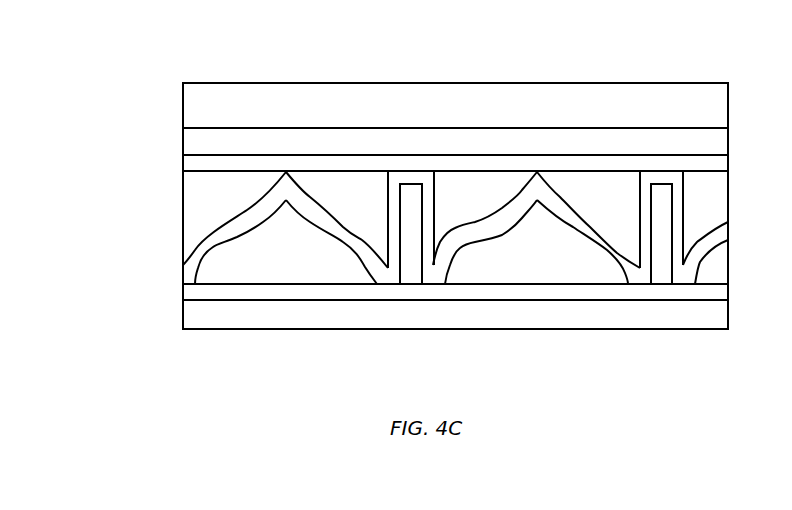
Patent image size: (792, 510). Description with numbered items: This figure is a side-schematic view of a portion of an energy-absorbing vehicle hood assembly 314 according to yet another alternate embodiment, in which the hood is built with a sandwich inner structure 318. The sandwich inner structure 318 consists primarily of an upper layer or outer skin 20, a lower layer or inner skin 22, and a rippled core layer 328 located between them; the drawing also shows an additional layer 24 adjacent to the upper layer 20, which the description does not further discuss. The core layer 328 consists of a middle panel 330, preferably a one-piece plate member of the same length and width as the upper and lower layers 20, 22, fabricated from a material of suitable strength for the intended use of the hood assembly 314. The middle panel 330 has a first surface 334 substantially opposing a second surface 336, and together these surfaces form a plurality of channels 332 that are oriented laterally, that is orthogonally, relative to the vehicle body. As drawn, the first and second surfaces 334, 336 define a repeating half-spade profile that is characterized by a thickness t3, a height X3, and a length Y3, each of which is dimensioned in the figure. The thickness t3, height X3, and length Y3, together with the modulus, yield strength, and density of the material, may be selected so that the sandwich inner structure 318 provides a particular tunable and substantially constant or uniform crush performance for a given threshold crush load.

The energy-absorbing vehicle hood assembly 314 is at (280, 107).
The second layer 24 is at (428, 140).
The upper layer or outer skin 20 is at (500, 163).
The lower layer or inner skin 22 is at (283, 292).
The sandwich inner structure 318 is at (532, 313).
The rippled core layer 328 is at (578, 188).
The middle panel 330 is at (660, 177).
The channels 332 is at (457, 198).
The first surface 334 is at (703, 227).
The second surface 336 is at (718, 250).
The thickness t3 is at (188, 200).
The length Y3 is at (537, 223).
The height X3 is at (543, 201).